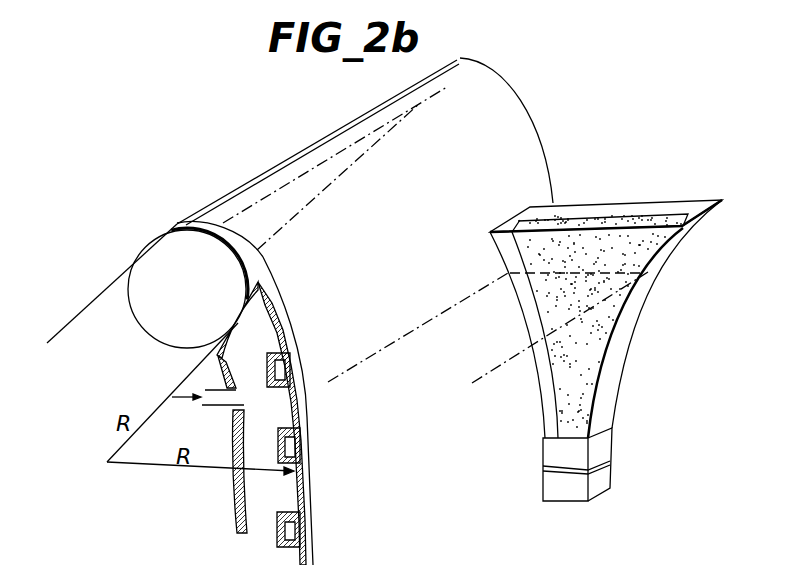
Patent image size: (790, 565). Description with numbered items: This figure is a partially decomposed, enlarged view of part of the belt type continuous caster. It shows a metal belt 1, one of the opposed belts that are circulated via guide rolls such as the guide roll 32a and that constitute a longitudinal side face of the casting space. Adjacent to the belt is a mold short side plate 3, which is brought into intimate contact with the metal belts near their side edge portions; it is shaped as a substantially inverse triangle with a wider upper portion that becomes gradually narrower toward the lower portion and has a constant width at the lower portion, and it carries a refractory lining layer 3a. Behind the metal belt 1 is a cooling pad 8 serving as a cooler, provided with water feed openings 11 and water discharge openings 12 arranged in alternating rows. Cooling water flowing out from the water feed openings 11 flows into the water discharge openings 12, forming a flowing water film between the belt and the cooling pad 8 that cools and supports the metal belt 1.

The metal belt 1 is at (280, 168).
The mold short side plate 3 is at (595, 213).
The refractory lining layer 3a is at (630, 223).
The cooling pad 8 is at (235, 493).
The water feed opening 11 is at (300, 413).
The water discharge opening 12 is at (292, 368).
The guide roll 32a is at (158, 255).